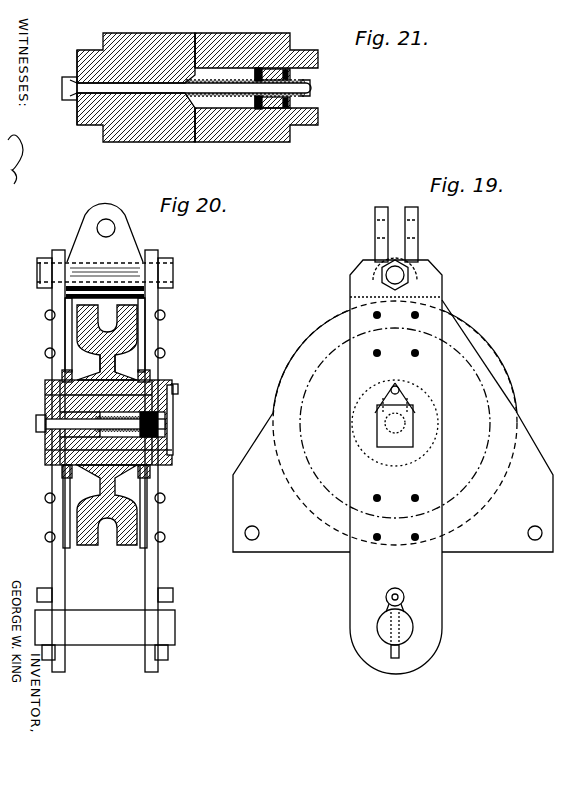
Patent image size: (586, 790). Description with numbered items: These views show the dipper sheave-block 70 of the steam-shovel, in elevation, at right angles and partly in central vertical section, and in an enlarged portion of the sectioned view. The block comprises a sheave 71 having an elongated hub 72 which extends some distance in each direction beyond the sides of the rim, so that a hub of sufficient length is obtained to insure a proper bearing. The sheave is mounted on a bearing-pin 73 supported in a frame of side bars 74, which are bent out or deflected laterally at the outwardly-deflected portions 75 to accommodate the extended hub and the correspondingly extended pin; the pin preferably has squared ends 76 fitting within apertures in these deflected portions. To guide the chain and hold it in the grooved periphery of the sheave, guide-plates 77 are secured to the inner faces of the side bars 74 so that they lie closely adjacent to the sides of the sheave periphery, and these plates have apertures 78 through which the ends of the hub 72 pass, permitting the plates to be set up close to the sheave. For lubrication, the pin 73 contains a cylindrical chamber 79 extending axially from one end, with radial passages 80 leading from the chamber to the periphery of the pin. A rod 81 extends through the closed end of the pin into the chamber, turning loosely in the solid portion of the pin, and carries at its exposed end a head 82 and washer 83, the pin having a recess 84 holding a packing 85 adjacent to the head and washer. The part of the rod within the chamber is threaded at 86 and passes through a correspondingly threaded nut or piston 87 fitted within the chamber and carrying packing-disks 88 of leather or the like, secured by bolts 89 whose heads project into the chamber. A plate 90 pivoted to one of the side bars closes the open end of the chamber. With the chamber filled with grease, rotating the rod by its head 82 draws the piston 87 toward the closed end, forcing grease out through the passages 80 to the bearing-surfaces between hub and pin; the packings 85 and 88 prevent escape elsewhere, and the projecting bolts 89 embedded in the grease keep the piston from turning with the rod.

In FIG. 19, the dipper sheave-block 70 is at (420, 440).
In FIG. 20, the sheave 71 is at (128, 316).
In FIG. 19, the sheave 71 is at (498, 365).
In FIG. 20, the elongated hub 72 is at (137, 375).
In FIG. 21, the bearing-pin 73 is at (138, 35).
In FIG. 20, the bearing-pin 73 is at (48, 388).
In FIG. 20, the side bars 74 is at (53, 330).
In FIG. 19, the side bars 74 is at (352, 574).
In FIG. 20, the outwardly-deflected portions 75 is at (48, 458).
In FIG. 20, the squared ends 76 is at (46, 408).
In FIG. 20, the guide-plates 77 is at (67, 338).
In FIG. 19, the guide-plates 77 is at (517, 413).
In FIG. 20, the apertures 78 is at (63, 378).
In FIG. 21, the cylindrical chamber 79 is at (215, 68).
In FIG. 20, the cylindrical chamber 79 is at (173, 413).
In FIG. 21, the radial passages 80 is at (200, 28).
In FIG. 20, the radial passages 80 is at (48, 451).
In FIG. 20, the rod 81 is at (47, 440).
In FIG. 21, the head 82 is at (72, 78).
In FIG. 20, the head 82 is at (37, 422).
In FIG. 21, the washer 83 is at (77, 98).
In FIG. 21, the recess 84 is at (82, 77).
In FIG. 21, the packing 85 is at (83, 128).
In FIG. 21, the threaded portion 86 is at (309, 86).
In FIG. 20, the threaded portion 86 is at (173, 425).
In FIG. 21, the nut or piston 87 is at (281, 110).
In FIG. 21, the packing-disks 88 is at (259, 110).
In FIG. 21, the bolts 89 is at (255, 75).
In FIG. 20, the plate 90 is at (170, 439).
In FIG. 19, the plate 90 is at (407, 414).